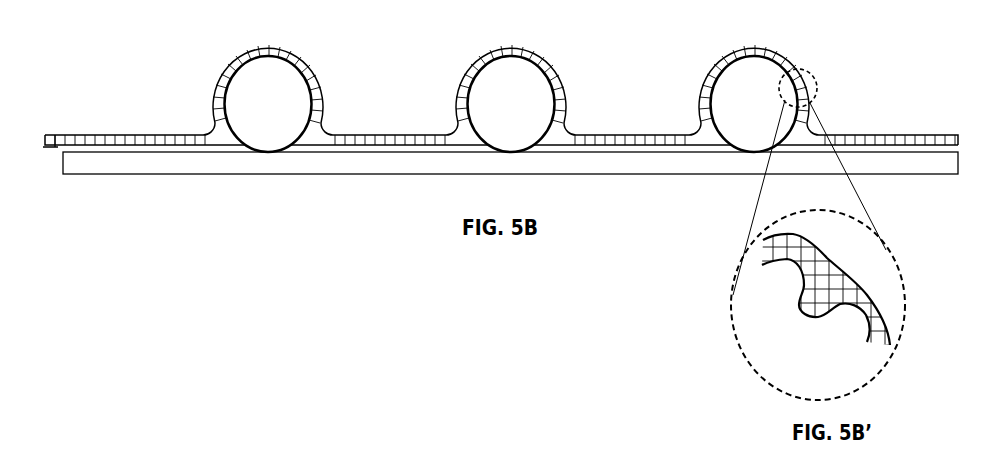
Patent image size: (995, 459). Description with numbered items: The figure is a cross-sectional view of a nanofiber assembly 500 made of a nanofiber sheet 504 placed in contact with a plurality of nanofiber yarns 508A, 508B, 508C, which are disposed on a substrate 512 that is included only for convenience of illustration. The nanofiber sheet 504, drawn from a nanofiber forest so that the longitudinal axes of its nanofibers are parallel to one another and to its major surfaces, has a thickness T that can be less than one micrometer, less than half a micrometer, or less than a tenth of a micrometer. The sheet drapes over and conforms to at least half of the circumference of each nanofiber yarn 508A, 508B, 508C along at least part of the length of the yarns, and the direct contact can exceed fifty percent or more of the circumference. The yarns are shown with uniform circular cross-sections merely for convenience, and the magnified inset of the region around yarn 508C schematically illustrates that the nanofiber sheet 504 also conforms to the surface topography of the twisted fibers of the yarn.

In FIG. 5B, the assembly 500 is at (197, 55).
In FIG. 5B, the nanofiber sheet 504 is at (760, 45).
In FIG. 5B', the nanofiber sheet 504 is at (803, 237).
In FIG. 5B, the nanofiber yarn 508A is at (292, 117).
In FIG. 5B, the nanofiber yarn 508B is at (537, 112).
In FIG. 5B, the nanofiber yarn 508C is at (778, 114).
In FIG. 5B', the nanofiber yarn 508C is at (792, 304).
In FIG. 5B, the substrate 512 is at (145, 174).
In FIG. 5B, the thickness T is at (45, 136).